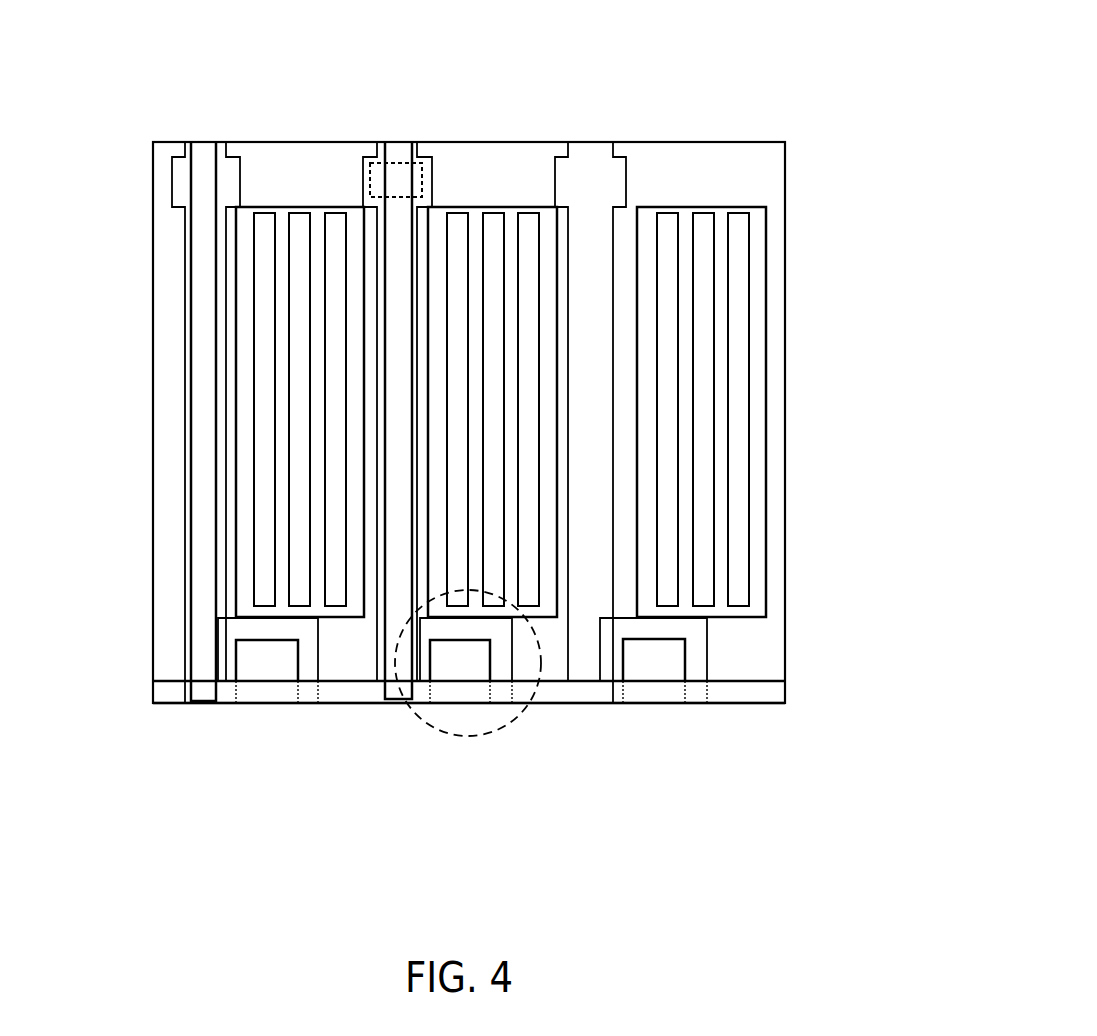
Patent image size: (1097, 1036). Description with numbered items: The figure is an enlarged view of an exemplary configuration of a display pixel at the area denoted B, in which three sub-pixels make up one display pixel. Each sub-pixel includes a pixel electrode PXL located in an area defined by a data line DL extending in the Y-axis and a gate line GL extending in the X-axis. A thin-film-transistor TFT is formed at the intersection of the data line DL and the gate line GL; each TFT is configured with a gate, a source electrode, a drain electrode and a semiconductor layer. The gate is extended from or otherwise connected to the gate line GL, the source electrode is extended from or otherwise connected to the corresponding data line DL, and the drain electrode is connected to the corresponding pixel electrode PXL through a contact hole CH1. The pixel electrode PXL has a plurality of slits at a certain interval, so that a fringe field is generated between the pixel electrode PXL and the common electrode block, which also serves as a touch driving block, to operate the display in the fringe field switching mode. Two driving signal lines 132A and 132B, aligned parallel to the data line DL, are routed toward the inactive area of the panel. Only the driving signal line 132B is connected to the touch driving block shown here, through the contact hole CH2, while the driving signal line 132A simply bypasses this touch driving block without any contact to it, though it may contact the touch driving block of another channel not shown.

The driving signal line 132A is at (207, 155).
The driving signal line 132B is at (400, 157).
The contact hole CH1 is at (470, 662).
The contact hole CH2 is at (419, 174).
The thin-film-transistor TFT is at (513, 732).
The pixel electrode PXL is at (772, 360).
The data line DL is at (182, 557).
The gate line GL is at (757, 685).
The display pixel area B is at (888, 292).